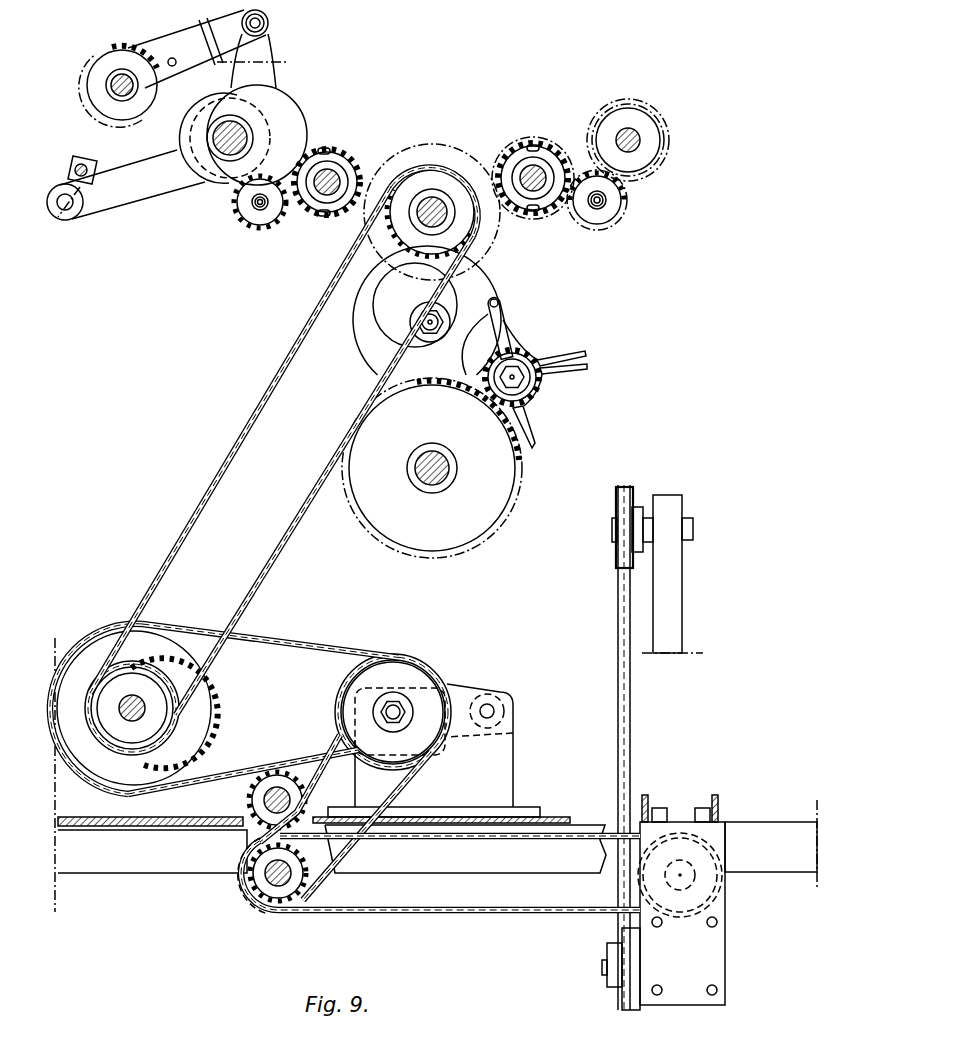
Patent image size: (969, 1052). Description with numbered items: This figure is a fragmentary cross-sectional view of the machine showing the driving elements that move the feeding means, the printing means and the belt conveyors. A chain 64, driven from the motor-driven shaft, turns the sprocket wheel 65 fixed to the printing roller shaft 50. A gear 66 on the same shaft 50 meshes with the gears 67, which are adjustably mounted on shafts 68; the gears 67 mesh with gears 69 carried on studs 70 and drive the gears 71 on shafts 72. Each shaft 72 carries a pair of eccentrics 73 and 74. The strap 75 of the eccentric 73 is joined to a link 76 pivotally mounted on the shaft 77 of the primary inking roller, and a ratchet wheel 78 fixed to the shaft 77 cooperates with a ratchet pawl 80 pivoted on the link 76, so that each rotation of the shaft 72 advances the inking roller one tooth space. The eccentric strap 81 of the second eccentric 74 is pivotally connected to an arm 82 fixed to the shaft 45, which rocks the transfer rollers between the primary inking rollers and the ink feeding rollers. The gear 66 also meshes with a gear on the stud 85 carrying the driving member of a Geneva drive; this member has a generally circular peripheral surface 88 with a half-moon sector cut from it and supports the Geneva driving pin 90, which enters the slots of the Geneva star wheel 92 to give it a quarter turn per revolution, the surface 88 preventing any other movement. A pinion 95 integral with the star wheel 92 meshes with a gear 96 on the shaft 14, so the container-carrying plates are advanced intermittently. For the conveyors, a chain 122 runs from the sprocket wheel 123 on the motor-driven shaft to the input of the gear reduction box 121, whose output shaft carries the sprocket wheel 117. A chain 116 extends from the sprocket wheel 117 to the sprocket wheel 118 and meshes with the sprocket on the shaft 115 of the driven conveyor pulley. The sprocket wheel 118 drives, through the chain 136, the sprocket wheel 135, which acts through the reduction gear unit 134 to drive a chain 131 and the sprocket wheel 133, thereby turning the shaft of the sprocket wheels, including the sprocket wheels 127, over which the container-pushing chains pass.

The ratchet wheel 78 is at (112, 55).
The ratchet pawl 80 is at (152, 43).
The link 76 is at (187, 52).
The eccentric strap 75 is at (264, 48).
The shaft of primary inking roller 77 is at (114, 95).
The eccentric 73 is at (274, 103).
The gear 71 is at (262, 128).
The shaft 72 is at (219, 137).
The shaft 45 is at (80, 164).
The eccentric 74 is at (182, 153).
The arm 82 is at (78, 184).
The eccentric strap 81 is at (183, 178).
The stud 70 is at (256, 201).
The gear 69 is at (252, 214).
The gear 67 is at (305, 152).
The shaft 68 is at (328, 166).
The gear 66 is at (388, 170).
The sprocket wheel 65 is at (436, 178).
The printing roller shaft 50 is at (364, 226).
The stud 85 is at (426, 322).
The peripheral circular surface 88 is at (374, 340).
The Geneva driving pin 90 is at (499, 299).
The pinion 95 is at (521, 352).
The Geneva star wheel 92 is at (551, 383).
The gear 96 is at (508, 459).
The shaft 14 is at (447, 476).
The chain 64 is at (284, 549).
The sprocket wheel 133 is at (618, 556).
The chain 131 is at (628, 737).
The chain 122 is at (323, 655).
The sprocket wheel 117 is at (408, 680).
The sprocket wheels 127 is at (499, 691).
The gear reduction box 121 is at (514, 733).
The sprocket wheel 123 is at (214, 691).
The shaft 115 is at (280, 782).
The chain 116 is at (410, 787).
The sprocket wheel 118 is at (262, 899).
The chain 136 is at (466, 917).
The sprocket wheel 135 is at (716, 890).
The reduction gear unit 134 is at (718, 932).